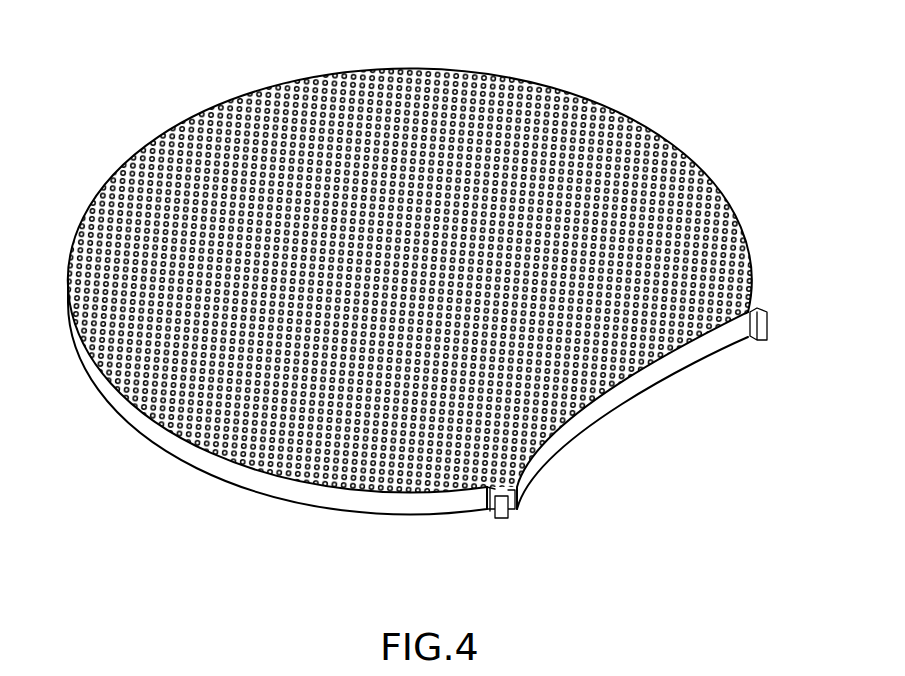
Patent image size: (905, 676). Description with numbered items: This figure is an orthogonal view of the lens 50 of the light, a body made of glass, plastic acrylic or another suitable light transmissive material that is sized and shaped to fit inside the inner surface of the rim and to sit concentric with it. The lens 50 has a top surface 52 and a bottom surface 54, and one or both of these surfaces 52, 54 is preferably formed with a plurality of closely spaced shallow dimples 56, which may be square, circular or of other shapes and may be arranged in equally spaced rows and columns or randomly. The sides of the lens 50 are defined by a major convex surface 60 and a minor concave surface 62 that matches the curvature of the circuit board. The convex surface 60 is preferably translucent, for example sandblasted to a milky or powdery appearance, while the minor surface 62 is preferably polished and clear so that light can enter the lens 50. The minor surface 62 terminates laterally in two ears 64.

The lens 50 is at (431, 290).
The top surface 52 is at (392, 248).
The bottom surface 54 is at (317, 507).
The dimples 56 is at (462, 98).
The major convex surface 60 is at (152, 420).
The minor concave surface 62 is at (635, 382).
The ears 64 is at (768, 320).